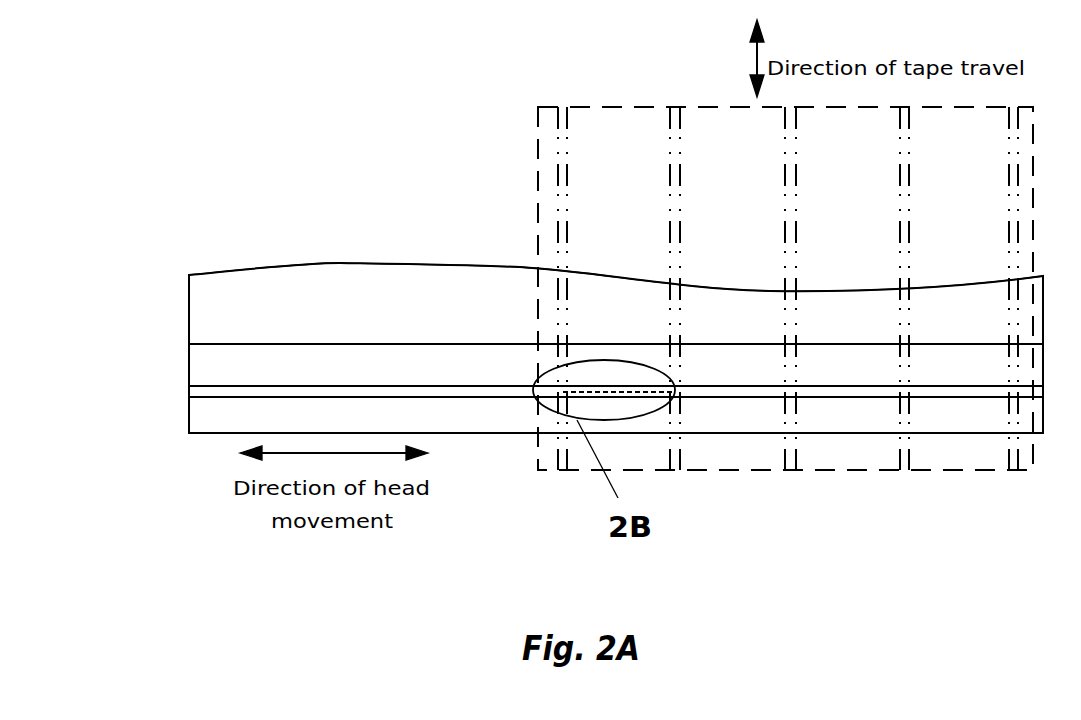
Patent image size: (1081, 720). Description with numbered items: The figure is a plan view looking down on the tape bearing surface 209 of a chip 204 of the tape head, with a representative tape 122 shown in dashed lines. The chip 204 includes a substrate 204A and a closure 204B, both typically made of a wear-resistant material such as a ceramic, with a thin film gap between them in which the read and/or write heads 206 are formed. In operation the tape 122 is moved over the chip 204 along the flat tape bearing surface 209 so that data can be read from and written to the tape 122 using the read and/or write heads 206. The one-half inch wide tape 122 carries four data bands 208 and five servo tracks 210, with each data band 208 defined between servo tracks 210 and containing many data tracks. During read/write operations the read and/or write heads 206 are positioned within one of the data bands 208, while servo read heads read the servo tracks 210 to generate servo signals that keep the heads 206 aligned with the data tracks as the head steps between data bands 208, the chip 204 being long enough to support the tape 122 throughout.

The chip 204 is at (238, 244).
The substrate 204A is at (356, 263).
The closure 204B is at (189, 417).
The tape bearing surface 209 is at (422, 372).
The tape 122 is at (538, 115).
The data bands 208 is at (730, 127).
The servo tracks 210 is at (668, 210).
The read and/or write heads 206 is at (530, 390).